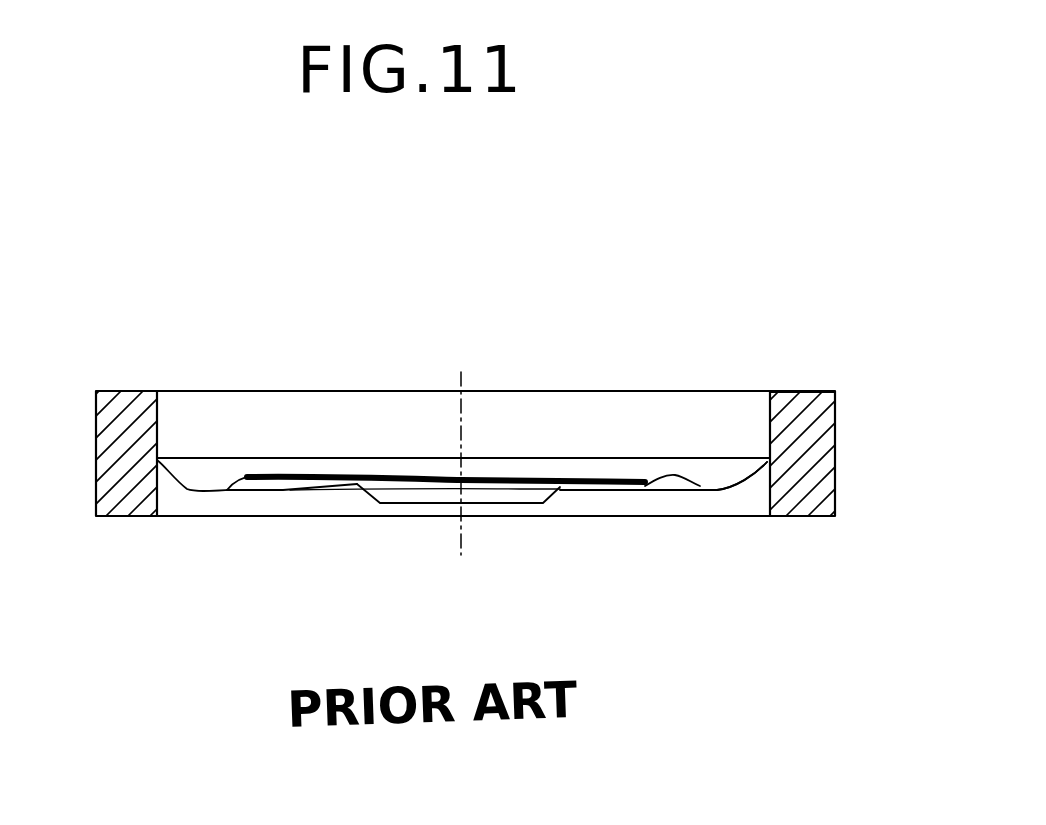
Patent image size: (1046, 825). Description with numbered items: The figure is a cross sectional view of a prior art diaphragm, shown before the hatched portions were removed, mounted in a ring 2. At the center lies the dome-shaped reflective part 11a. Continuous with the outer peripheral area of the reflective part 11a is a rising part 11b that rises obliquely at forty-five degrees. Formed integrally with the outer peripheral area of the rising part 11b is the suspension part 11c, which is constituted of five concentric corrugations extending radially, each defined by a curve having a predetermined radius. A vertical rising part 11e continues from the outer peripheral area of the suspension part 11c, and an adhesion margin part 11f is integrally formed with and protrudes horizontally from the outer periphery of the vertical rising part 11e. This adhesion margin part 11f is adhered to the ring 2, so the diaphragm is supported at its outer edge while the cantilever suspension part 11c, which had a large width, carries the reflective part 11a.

The ring 2 is at (833, 415).
The dome-shaped reflective part 11a is at (478, 497).
The rising part 11b is at (503, 477).
The suspension part 11c is at (653, 473).
The vertical rising part 11e is at (767, 432).
The adhesion margin part 11f is at (785, 391).